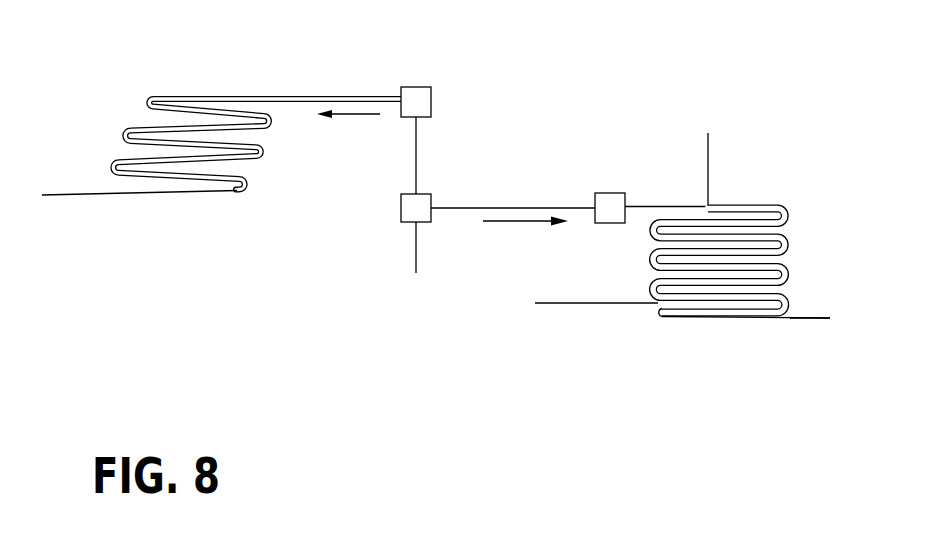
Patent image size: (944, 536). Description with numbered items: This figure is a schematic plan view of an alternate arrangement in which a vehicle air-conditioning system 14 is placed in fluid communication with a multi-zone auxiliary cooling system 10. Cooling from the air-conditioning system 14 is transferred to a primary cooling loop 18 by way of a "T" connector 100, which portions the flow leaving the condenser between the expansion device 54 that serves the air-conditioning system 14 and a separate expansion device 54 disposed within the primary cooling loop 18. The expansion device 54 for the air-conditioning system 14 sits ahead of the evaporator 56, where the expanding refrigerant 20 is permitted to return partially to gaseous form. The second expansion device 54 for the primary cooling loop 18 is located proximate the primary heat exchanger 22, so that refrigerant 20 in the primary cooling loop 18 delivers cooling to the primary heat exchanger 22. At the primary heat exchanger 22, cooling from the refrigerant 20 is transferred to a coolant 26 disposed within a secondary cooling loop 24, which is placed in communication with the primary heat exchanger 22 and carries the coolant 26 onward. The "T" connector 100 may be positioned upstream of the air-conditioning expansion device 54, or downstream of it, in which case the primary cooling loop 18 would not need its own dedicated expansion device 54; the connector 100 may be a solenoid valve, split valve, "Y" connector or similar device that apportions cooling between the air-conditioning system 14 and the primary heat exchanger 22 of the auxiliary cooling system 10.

The auxiliary cooling system 10 is at (639, 125).
The air-conditioning system 14 is at (195, 79).
The primary cooling loop 18 is at (512, 207).
The refrigerant 20 is at (279, 93).
The primary heat exchanger 22 is at (760, 176).
The secondary cooling loop 24 is at (810, 317).
The coolant 26 is at (810, 322).
The expansion device 54 is at (432, 88).
The evaporator 56 is at (165, 207).
The "T" connector 100 is at (400, 207).